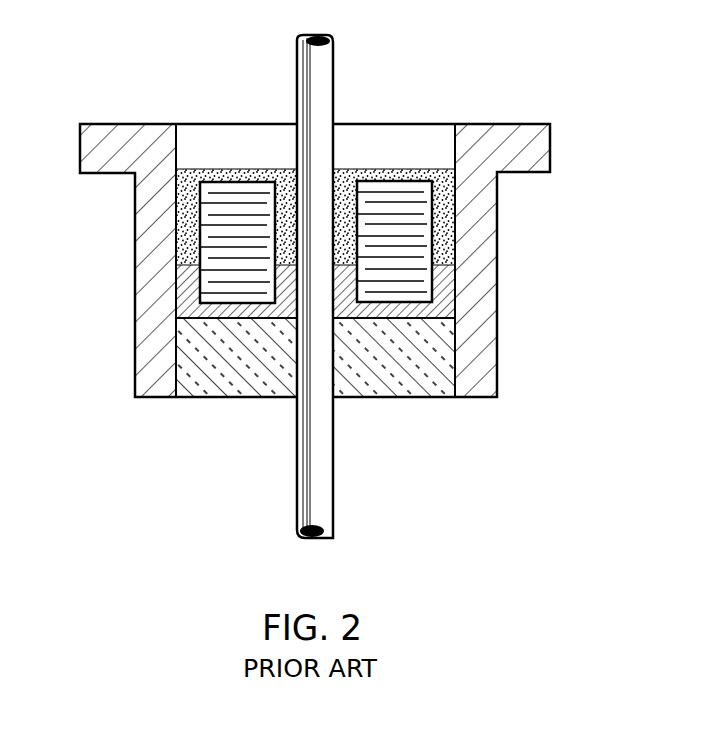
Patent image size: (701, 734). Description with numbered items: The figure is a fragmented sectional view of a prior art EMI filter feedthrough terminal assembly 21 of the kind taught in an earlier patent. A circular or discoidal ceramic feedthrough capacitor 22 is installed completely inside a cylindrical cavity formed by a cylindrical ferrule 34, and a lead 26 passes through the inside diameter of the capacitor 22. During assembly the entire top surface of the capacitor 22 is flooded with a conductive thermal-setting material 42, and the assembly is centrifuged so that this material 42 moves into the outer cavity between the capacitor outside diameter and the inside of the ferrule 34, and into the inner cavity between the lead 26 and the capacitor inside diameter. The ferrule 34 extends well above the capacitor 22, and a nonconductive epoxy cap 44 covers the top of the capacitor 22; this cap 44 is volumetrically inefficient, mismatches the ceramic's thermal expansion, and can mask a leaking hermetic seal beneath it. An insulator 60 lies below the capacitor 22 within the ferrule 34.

The prior art EMI filter feedthrough terminal assembly 21 is at (349, 286).
The feedthrough capacitor 22 is at (472, 287).
The ferrule 34 is at (498, 332).
The conductive thermal-setting material 42 is at (190, 300).
The nonconductive epoxy coating (cap) 44 is at (405, 175).
The insulator 60 is at (248, 398).
The lead 26 is at (333, 490).